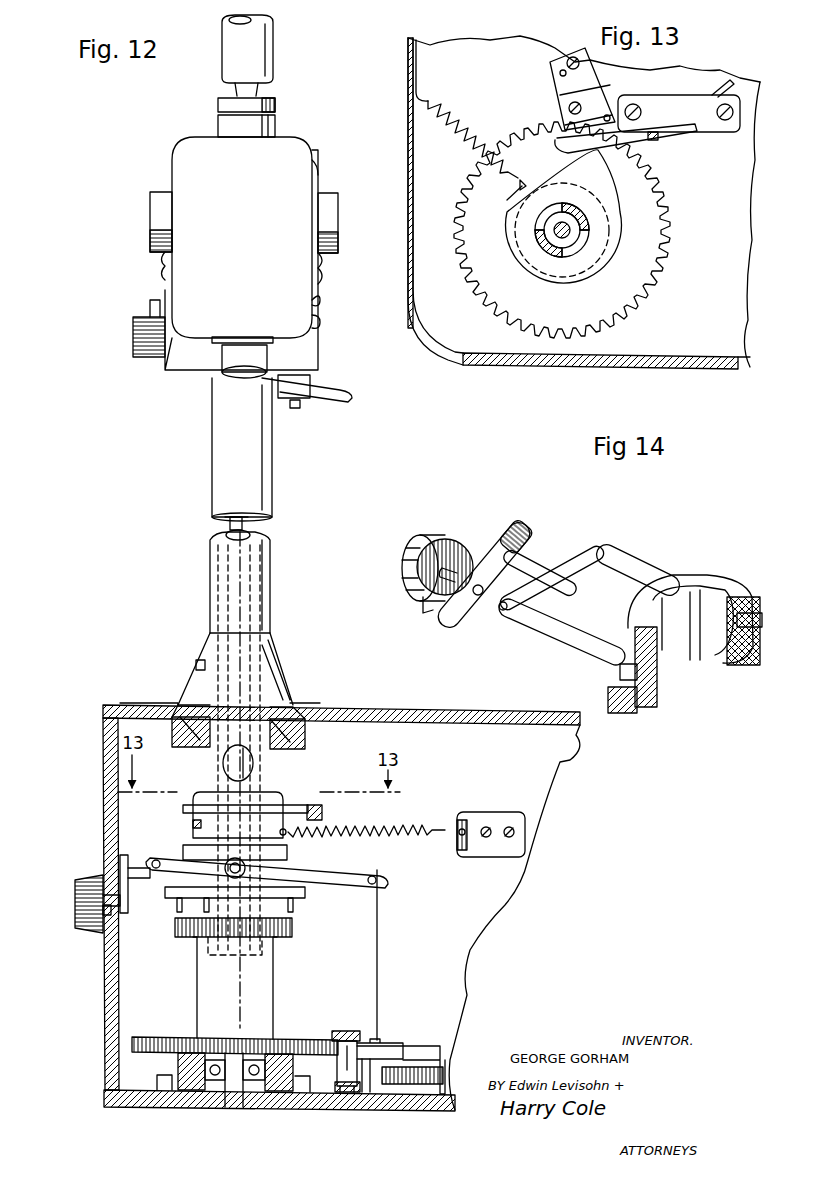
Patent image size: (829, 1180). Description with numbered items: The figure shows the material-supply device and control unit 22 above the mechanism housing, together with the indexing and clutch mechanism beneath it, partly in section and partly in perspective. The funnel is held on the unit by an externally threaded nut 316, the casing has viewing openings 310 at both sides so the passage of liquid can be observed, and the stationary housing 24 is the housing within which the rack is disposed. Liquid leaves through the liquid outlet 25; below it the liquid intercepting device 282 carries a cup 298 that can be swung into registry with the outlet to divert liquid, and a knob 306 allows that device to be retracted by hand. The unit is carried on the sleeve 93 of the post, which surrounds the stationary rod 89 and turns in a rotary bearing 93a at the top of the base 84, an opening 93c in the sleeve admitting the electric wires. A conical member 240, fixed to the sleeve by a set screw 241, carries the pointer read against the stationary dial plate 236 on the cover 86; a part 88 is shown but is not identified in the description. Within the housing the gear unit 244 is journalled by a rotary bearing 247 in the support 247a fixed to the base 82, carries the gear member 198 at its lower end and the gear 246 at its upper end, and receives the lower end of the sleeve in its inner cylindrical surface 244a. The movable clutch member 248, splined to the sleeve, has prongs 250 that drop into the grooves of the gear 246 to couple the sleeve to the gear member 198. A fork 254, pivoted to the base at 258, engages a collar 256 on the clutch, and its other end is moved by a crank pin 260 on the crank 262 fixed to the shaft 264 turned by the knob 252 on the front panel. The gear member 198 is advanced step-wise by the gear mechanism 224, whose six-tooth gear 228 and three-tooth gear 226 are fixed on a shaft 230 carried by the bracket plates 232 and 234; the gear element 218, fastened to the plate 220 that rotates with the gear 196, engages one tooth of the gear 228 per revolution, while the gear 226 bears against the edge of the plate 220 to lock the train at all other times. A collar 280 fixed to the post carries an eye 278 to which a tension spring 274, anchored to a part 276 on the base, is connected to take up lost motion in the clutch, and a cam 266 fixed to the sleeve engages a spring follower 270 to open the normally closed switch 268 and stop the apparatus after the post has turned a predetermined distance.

In FIG. 12, the stationary housing 24 is at (272, 55).
In FIG. 12, the externally threaded nut 316 is at (218, 105).
In FIG. 12, the material-supply device and control unit 22 is at (313, 138).
In FIG. 12, the viewing openings 310 is at (150, 212).
In FIG. 12, the knob 306 is at (133, 338).
In FIG. 12, the liquid outlet 25 is at (222, 345).
In FIG. 12, the cup 298 is at (232, 360).
In FIG. 12, the liquid intercepting device 282 is at (258, 392).
In FIG. 12, the stationary rod 89 is at (232, 520).
In FIG. 13, the stationary rod 89 is at (578, 228).
In FIG. 12, the sleeve 93 is at (275, 545).
In FIG. 13, the sleeve 93 is at (575, 240).
In FIG. 12, the conical member 240 is at (283, 672).
In FIG. 12, the set screw 241 is at (198, 662).
In FIG. 12, the stationary dial plate 236 is at (160, 705).
In FIG. 12, the cover 86 is at (420, 709).
In FIG. 12, the rotary bearing 93a is at (290, 725).
In FIG. 12, the side wall 88 is at (103, 1058).
In FIG. 12, the base 82 is at (130, 1108).
In FIG. 12, the base 84 is at (542, 755).
In FIG. 12, the collar 280 is at (198, 800).
In FIG. 12, the opening 93c is at (252, 765).
In FIG. 12, the cam 266 is at (300, 805).
In FIG. 13, the cam 266 is at (620, 197).
In FIG. 12, the spring follower 270 is at (323, 811).
In FIG. 13, the spring follower 270 is at (648, 150).
In FIG. 12, the eye 278 is at (290, 834).
In FIG. 13, the eye 278 is at (521, 183).
In FIG. 12, the tension spring 274 is at (400, 828).
In FIG. 13, the tension spring 274 is at (462, 140).
In FIG. 12, the part fixed to the base 276 is at (500, 822).
In FIG. 13, the part fixed to the base 276 is at (420, 78).
In FIG. 12, the movable clutch member 248 is at (292, 862).
In FIG. 14, the movable clutch member 248 is at (726, 572).
In FIG. 12, the fork 254 is at (168, 860).
In FIG. 14, the fork 254 is at (632, 540).
In FIG. 12, the fork pivot 258 is at (384, 879).
In FIG. 12, the crank 262 is at (126, 855).
In FIG. 14, the crank 262 is at (508, 518).
In FIG. 12, the crank pin 260 is at (162, 880).
In FIG. 14, the crank pin 260 is at (545, 558).
In FIG. 12, the knob 252 is at (76, 896).
In FIG. 14, the knob 252 is at (432, 538).
In FIG. 12, the shaft 264 is at (105, 935).
In FIG. 14, the shaft 264 is at (475, 545).
In FIG. 12, the prongs 250 is at (294, 905).
In FIG. 12, the gear 246 is at (294, 931).
In FIG. 12, the inner cylindrical surface 244a is at (266, 952).
In FIG. 12, the gear unit 244 is at (195, 977).
In FIG. 12, the gear member 198 is at (150, 1038).
In FIG. 13, the gear member 198 is at (655, 262).
In FIG. 12, the rotary bearing 247 is at (215, 1092).
In FIG. 12, the support 247a is at (268, 1092).
In FIG. 12, the six-tooth gear 228 is at (340, 1045).
In FIG. 12, the gear mechanism 224 is at (355, 1030).
In FIG. 12, the fixed bracket plate 232 is at (320, 1094).
In FIG. 12, the shaft 230 is at (342, 1094).
In FIG. 12, the fixed bracket plate 234 is at (395, 1045).
In FIG. 12, the gear element 218 is at (402, 1043).
In FIG. 13, the gear element 218 is at (548, 70).
In FIG. 12, the plate 220 is at (432, 1056).
In FIG. 13, the plate 220 is at (655, 70).
In FIG. 12, the three-tooth gear 226 is at (366, 1092).
In FIG. 12, the gear 196 is at (420, 1086).
In FIG. 13, the normally closed switch 268 is at (745, 90).
In FIG. 14, the collar 256 is at (642, 708).